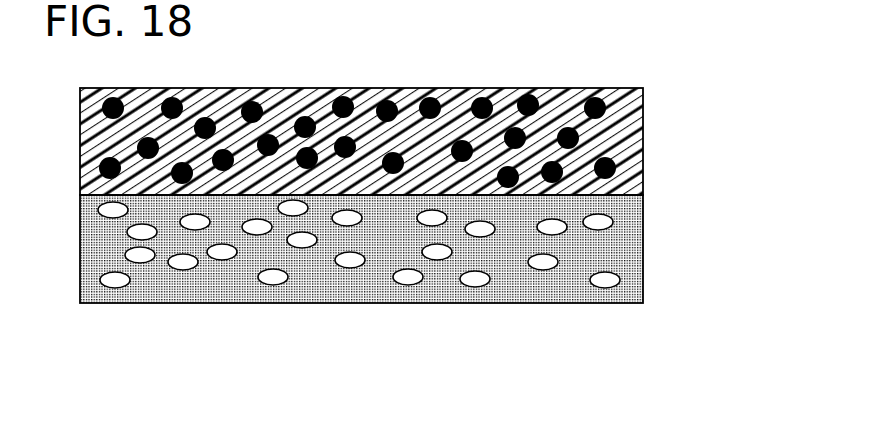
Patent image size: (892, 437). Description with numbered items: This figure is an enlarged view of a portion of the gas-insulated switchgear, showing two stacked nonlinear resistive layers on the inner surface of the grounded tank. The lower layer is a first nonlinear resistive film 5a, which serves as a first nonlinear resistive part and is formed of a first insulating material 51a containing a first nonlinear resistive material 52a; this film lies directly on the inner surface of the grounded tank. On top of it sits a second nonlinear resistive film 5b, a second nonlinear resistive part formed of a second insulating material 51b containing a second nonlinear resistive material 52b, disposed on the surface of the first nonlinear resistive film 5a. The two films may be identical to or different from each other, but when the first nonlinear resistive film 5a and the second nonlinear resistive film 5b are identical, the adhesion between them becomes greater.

The first nonlinear resistive film 5a is at (428, 286).
The second nonlinear resistive film 5b is at (428, 107).
The first insulating material 51a is at (310, 283).
The second insulating material 51b is at (447, 112).
The first nonlinear resistive material 52a is at (547, 262).
The second nonlinear resistive material 52b is at (532, 106).